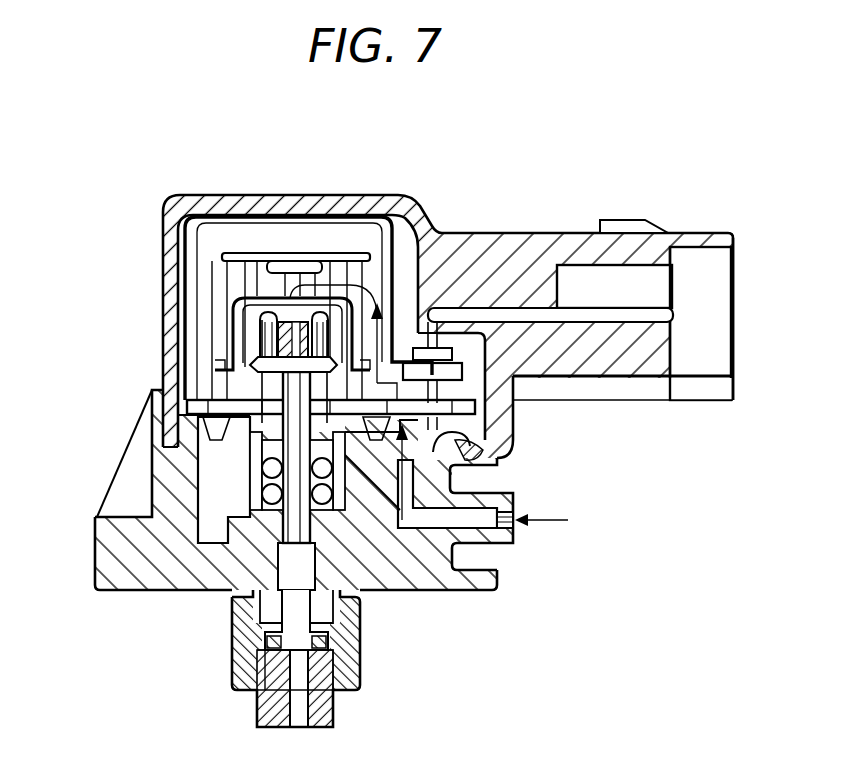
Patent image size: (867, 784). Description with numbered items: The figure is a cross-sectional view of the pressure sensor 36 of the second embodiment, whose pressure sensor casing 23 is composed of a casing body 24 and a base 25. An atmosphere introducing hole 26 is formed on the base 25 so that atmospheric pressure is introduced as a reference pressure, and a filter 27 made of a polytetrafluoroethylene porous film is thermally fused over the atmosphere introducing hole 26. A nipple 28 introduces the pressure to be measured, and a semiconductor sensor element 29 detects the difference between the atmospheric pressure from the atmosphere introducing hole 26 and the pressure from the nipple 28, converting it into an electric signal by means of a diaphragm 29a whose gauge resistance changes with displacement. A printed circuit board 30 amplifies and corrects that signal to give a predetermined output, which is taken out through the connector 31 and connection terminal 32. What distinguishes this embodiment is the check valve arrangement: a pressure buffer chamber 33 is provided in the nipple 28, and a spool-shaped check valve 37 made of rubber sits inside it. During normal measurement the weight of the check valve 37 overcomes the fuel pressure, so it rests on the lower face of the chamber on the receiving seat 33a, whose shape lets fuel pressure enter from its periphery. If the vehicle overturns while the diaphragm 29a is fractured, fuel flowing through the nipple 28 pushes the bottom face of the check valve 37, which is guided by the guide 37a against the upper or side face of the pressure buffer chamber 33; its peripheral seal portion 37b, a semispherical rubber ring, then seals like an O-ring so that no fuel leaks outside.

The pressure sensor casing 23 is at (172, 212).
The casing body 24 is at (478, 240).
The base 25 is at (105, 592).
The atmosphere introducing hole 26 is at (500, 490).
The filter 27 is at (513, 448).
The nipple 28 is at (327, 727).
The semiconductor sensor element 29 is at (257, 293).
The diaphragm 29a is at (292, 316).
The printed circuit board 30 is at (247, 253).
The connector 31 is at (673, 275).
The connection terminal 32 is at (653, 307).
The pressure buffer chamber 33 is at (230, 610).
The receiving seat 33a is at (232, 687).
The pressure sensor 36 is at (361, 190).
The spool-shaped check valve 37 is at (335, 683).
The guide 37a is at (298, 600).
The peripheral seal portion 37b is at (303, 663).